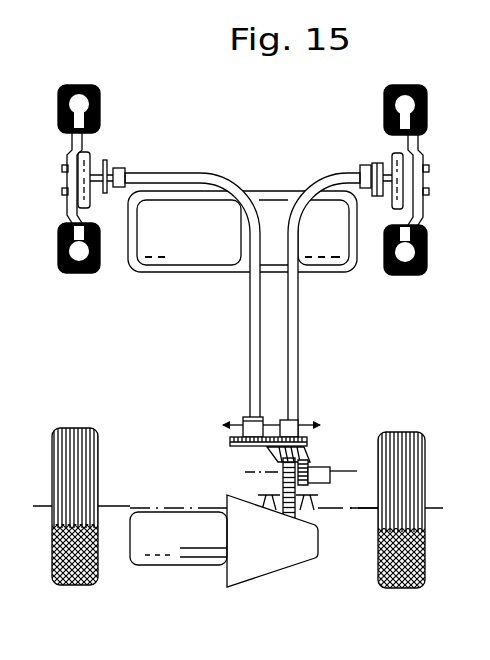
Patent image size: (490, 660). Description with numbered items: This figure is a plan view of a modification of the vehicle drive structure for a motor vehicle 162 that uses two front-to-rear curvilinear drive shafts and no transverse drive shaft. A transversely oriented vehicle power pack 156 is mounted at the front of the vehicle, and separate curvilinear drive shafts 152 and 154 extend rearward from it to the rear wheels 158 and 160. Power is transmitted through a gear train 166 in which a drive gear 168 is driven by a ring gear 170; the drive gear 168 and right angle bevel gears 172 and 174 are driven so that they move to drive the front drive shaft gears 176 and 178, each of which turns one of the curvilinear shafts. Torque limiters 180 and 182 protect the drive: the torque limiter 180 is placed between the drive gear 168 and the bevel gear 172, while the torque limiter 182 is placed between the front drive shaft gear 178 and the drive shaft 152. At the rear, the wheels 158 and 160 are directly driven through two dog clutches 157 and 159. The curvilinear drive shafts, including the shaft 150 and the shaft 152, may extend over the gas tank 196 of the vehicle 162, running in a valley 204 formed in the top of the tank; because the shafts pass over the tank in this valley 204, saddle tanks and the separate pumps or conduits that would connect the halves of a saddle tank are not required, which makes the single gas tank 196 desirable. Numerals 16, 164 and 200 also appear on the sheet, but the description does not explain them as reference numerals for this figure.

The section line 16- 16 is at (113, 242).
The curvilinear drive shaft 150 is at (297, 325).
The curvilinear drive shaft 152 is at (249, 330).
The curvilinear drive shaft 154 is at (297, 355).
The vehicle power pack 156 is at (262, 575).
The dog clutch 157 is at (118, 168).
The rear wheel 158 is at (88, 273).
The dog clutch 159 is at (362, 167).
The rear wheel 160 is at (410, 275).
The motor vehicle 162 is at (87, 511).
The right rear wheel 164 is at (400, 590).
The gear train 166 is at (300, 440).
The drive gear 168 is at (283, 476).
The ring gear 170 is at (298, 528).
The right angle bevel gear 172 is at (311, 460).
The right angle bevel gear 174 is at (266, 452).
The front drive shaft gear 176 is at (302, 424).
The front drive shaft gear 178 is at (233, 441).
The torque limiter 180 is at (322, 483).
The torque limiter 182 is at (243, 418).
The gas tank 196 is at (320, 272).
The tire 200 is at (78, 588).
The valley 204 is at (282, 210).